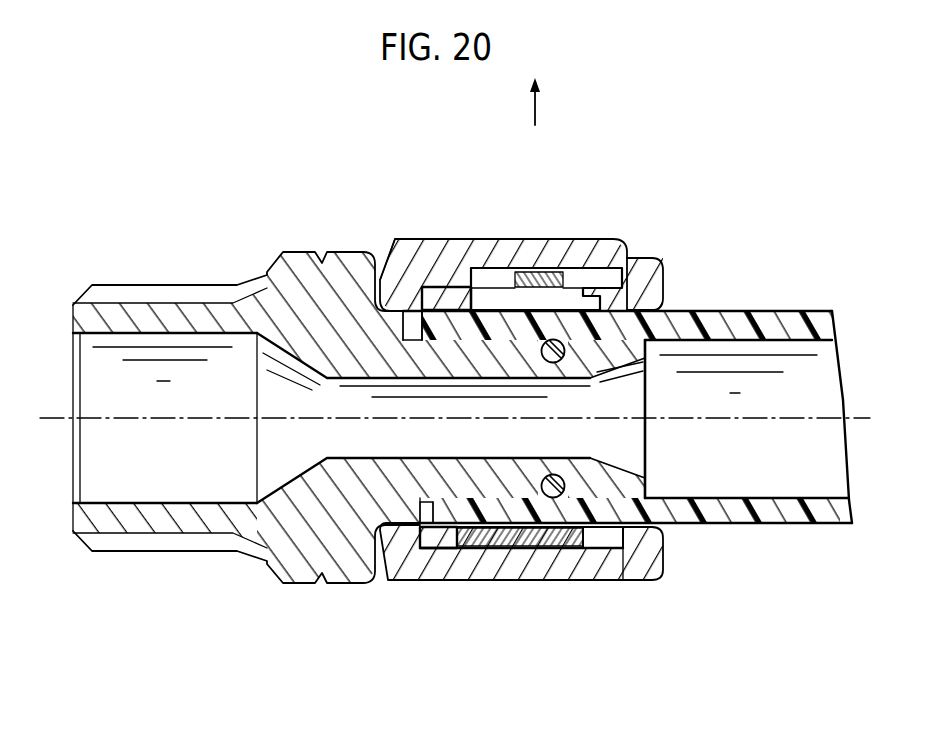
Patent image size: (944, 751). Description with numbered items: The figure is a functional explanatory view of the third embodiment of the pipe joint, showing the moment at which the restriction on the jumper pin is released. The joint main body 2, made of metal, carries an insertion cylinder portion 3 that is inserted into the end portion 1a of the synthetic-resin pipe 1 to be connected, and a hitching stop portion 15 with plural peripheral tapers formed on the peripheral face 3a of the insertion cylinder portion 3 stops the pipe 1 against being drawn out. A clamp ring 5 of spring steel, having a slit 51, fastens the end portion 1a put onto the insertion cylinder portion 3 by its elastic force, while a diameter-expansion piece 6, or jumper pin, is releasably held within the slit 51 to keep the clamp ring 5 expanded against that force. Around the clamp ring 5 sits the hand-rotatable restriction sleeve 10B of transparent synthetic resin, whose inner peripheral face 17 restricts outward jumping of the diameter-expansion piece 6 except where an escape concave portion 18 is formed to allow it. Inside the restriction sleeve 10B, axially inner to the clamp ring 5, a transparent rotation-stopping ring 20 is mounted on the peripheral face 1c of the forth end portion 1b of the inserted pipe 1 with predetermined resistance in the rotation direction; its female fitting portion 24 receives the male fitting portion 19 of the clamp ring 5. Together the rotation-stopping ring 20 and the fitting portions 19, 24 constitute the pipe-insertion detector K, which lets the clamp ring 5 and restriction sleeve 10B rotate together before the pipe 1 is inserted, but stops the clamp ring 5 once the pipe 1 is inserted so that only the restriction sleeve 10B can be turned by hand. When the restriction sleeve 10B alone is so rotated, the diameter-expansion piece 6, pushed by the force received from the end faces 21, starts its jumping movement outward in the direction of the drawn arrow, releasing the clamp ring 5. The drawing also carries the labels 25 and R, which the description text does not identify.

The pipe 1 is at (741, 304).
The end portion 1a is at (447, 300).
The forth end portion 1b is at (390, 243).
The peripheral face 1c is at (445, 310).
The joint main body 2 is at (305, 240).
The insertion cylinder portion 3 is at (612, 350).
The peripheral face 3a is at (500, 268).
The clamp ring 5 is at (580, 565).
The diameter-expansion piece 6 is at (562, 266).
The restriction sleeve 10B is at (552, 239).
The hitching stop portion 15 is at (472, 290).
The inner peripheral face 17 is at (480, 548).
The escape concave portion 18 is at (590, 268).
The male fitting portion 19 is at (462, 552).
The rotation-stopping ring 20 is at (430, 300).
The end faces 21 is at (630, 258).
The female fitting portion 24 is at (447, 552).
The stop ring 25 is at (452, 295).
The slit 51 is at (620, 239).
The pipe-insertion detector K is at (441, 558).
The rotation direction R is at (533, 227).